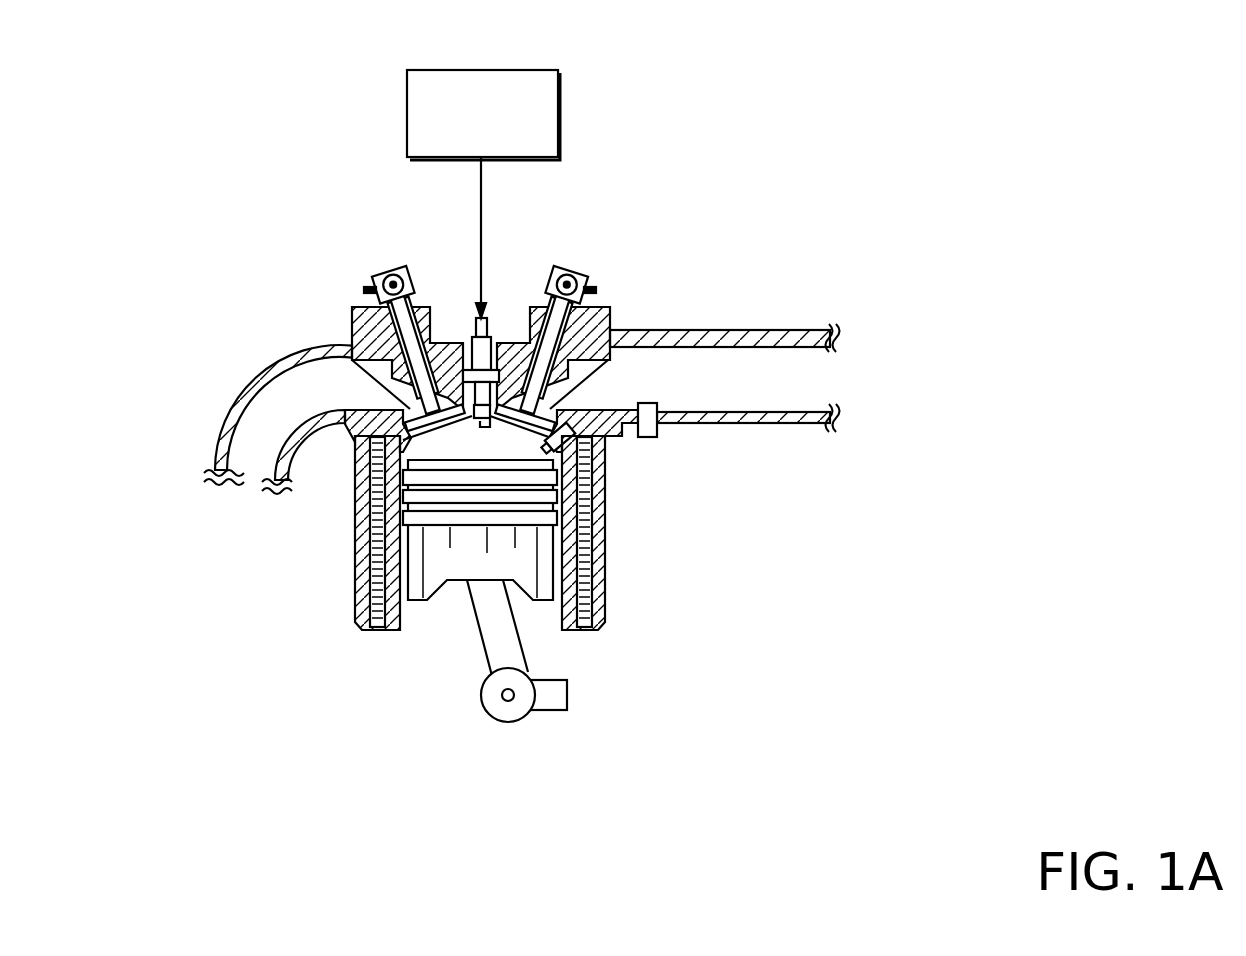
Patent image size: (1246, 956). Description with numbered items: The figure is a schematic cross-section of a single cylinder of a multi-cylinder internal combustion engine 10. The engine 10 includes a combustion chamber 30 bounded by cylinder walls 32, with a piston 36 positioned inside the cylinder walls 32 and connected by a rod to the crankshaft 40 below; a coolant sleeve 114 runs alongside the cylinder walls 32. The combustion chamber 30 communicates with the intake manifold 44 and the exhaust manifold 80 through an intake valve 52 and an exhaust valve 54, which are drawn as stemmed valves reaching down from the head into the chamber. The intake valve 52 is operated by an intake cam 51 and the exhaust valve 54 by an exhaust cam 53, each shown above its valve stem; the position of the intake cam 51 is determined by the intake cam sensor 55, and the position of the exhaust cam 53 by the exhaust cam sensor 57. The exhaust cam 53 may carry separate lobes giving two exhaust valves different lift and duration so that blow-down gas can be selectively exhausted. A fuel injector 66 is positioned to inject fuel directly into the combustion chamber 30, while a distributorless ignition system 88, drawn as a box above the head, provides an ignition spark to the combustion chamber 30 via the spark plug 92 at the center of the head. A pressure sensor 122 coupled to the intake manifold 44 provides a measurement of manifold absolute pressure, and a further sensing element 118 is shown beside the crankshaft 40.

The internal combustion engine 10 is at (509, 475).
The combustion chamber 30 is at (478, 435).
The cylinder walls 32 is at (405, 608).
The piston 36 is at (460, 562).
The crankshaft 40 is at (498, 720).
The intake manifold 44 is at (625, 388).
The intake cam 51 is at (556, 270).
The intake valve 52 is at (496, 400).
The exhaust cam 53 is at (405, 265).
The exhaust valve 54 is at (393, 392).
The intake cam sensor 55 is at (590, 290).
The exhaust cam sensor 57 is at (370, 290).
The fuel injector 66 is at (570, 428).
The exhaust manifold 80 is at (298, 399).
The distributorless ignition system 88 is at (427, 70).
The spark plug 92 is at (476, 352).
The coolant sleeve 114 is at (580, 565).
The Hall effect sensor 118 is at (551, 712).
The pressure sensor 122 is at (656, 440).